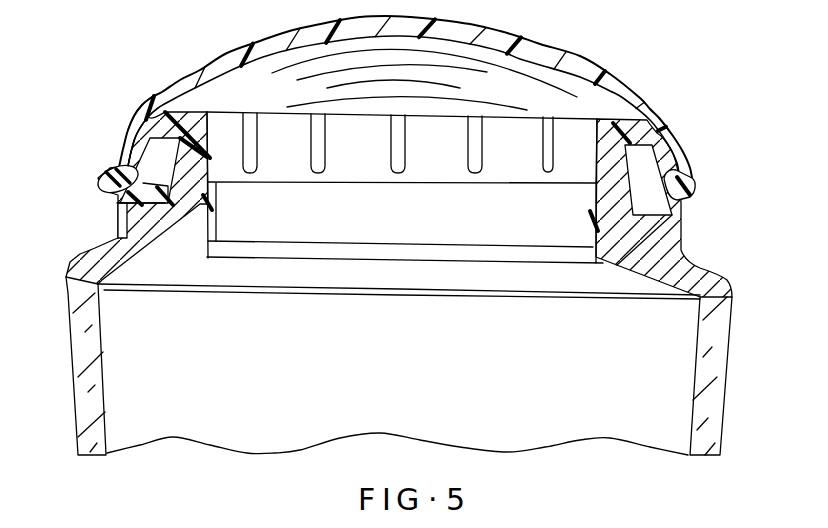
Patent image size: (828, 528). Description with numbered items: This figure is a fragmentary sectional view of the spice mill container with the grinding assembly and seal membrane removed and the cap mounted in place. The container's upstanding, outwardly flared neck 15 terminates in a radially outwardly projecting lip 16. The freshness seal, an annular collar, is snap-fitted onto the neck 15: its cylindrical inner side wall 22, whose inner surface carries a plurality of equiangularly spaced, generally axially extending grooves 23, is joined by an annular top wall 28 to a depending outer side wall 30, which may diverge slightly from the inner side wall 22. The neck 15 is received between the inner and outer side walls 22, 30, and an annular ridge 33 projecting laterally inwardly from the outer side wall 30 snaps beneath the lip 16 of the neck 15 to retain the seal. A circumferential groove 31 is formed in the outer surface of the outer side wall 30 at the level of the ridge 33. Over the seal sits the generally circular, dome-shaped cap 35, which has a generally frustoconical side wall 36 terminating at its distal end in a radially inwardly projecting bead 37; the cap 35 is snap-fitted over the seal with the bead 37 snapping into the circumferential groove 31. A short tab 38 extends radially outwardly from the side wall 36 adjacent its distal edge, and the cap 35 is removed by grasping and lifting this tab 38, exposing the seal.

The neck 15 is at (622, 198).
The lip 16 is at (160, 139).
The inner side wall 22 is at (400, 223).
The grooves 23 is at (468, 171).
The top wall 28 is at (628, 128).
The outer side wall 30 is at (683, 238).
The circumferential groove 31 is at (687, 174).
The annular ridge 33 is at (147, 184).
The cap 35 is at (590, 60).
The side wall 36 is at (124, 136).
The bead 37 is at (127, 182).
The tab 38 is at (95, 182).